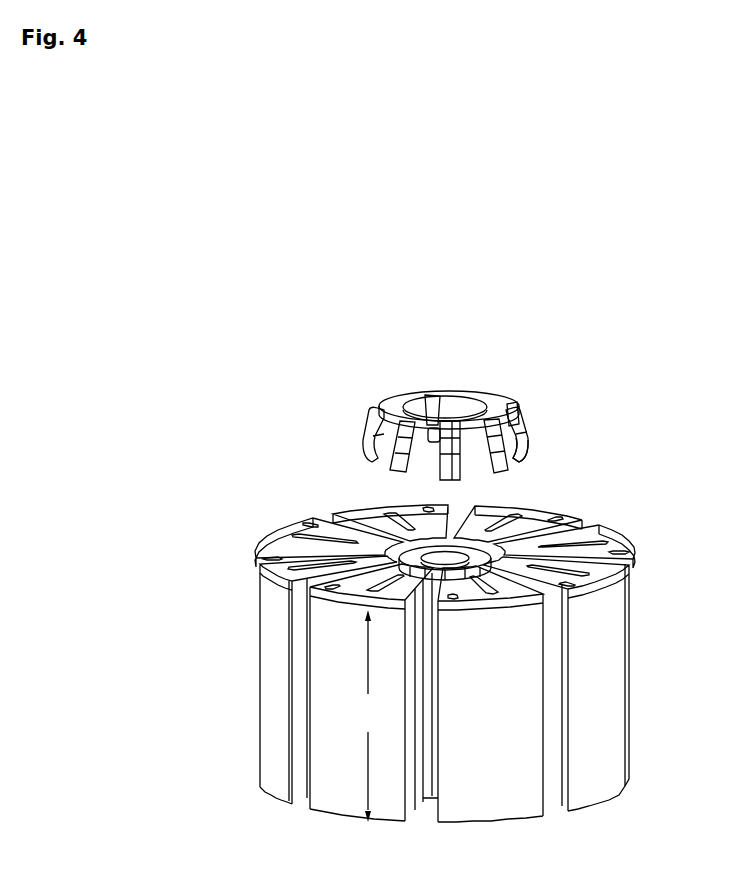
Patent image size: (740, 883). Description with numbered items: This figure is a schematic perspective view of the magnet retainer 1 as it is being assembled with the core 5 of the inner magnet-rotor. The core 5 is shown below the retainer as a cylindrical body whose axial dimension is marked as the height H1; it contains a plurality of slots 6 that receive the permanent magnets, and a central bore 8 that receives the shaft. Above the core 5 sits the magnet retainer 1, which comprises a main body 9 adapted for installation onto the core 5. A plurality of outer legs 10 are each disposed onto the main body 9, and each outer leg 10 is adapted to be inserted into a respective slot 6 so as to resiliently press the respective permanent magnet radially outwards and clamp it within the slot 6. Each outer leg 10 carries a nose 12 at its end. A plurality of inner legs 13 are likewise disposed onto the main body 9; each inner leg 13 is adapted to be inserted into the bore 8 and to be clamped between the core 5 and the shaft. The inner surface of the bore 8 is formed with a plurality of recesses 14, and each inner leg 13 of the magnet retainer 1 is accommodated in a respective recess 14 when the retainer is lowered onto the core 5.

The magnet retainer 1 is at (586, 433).
The core 5 is at (610, 682).
The slot 6 is at (424, 813).
The bore 8 is at (452, 560).
The main body 9 is at (421, 405).
The outer leg 10 is at (518, 424).
The nose 12 is at (527, 450).
The inner leg 13 is at (434, 441).
The recess 14 is at (403, 551).
The height of the core H1 is at (368, 716).